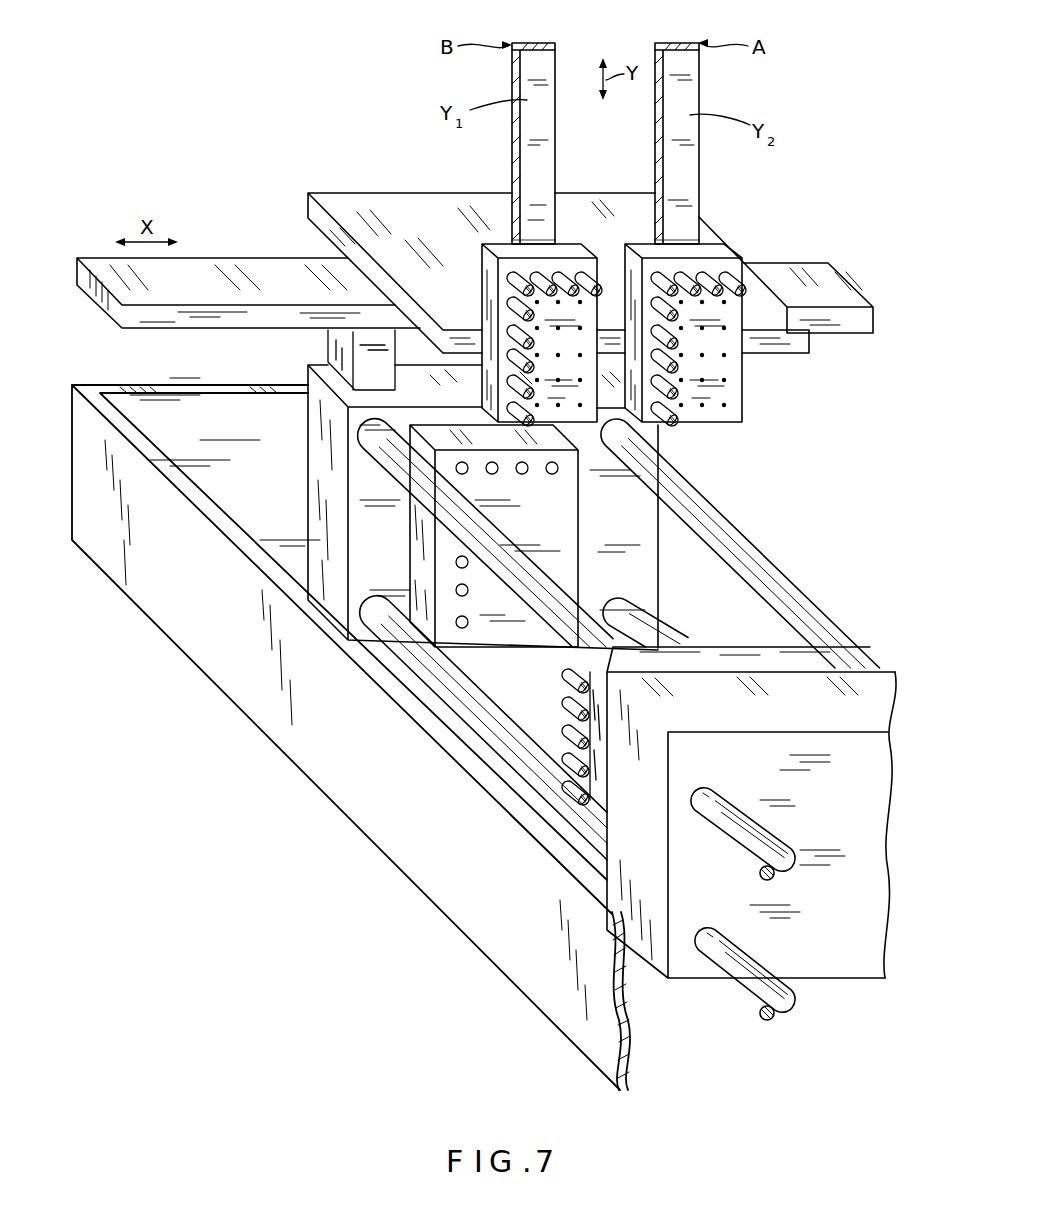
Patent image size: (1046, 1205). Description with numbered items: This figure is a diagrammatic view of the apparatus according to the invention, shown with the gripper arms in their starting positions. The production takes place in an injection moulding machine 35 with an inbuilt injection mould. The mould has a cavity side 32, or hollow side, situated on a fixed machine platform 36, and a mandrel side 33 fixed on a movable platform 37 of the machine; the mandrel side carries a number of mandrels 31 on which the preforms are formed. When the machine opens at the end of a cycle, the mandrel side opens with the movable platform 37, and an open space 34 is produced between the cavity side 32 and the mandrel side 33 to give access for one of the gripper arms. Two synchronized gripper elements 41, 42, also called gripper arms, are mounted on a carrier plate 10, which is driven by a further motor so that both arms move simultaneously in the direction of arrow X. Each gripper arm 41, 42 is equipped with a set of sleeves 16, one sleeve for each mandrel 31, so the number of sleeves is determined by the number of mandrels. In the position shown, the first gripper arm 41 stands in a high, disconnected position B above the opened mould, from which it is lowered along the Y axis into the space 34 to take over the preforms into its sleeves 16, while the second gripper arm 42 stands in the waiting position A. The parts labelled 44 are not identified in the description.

The carrier plate 10 is at (357, 200).
The support posts / leads 44 is at (500, 265).
The sleeves 16 is at (587, 274).
The first gripper element 41 is at (490, 357).
The second gripper element 42 is at (735, 398).
The fixed machine platform 36 is at (323, 450).
The injection moulding machine 35 is at (296, 420).
The cavity side 32 is at (438, 580).
The open space 34 is at (483, 665).
The movable platform 37 is at (867, 683).
The mandrel side 33 is at (580, 753).
The mandrel 31 is at (580, 681).